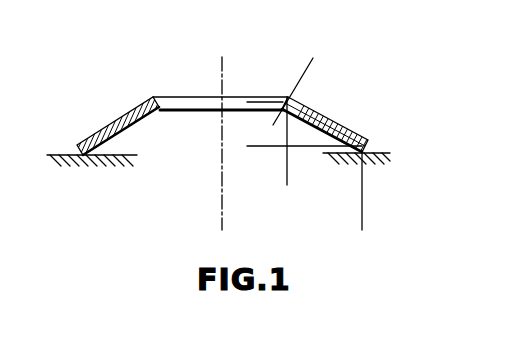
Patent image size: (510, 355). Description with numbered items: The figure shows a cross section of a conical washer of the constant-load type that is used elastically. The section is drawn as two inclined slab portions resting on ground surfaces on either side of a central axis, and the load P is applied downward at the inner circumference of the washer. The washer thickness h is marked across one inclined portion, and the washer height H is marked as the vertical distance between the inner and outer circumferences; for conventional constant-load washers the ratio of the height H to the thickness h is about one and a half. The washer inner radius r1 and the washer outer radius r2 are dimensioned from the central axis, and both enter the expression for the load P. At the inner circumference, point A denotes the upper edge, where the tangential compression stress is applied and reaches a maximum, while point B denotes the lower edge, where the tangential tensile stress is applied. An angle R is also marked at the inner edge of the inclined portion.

The load P is at (155, 88).
The washer thickness h is at (124, 143).
The lower edge of the inner circumference B is at (161, 112).
The upper edge of the inner circumference A is at (308, 100).
The cone angle R is at (319, 108).
The washer height H is at (257, 102).
The washer inner radius r1 is at (223, 178).
The washer outer radius r2 is at (223, 216).